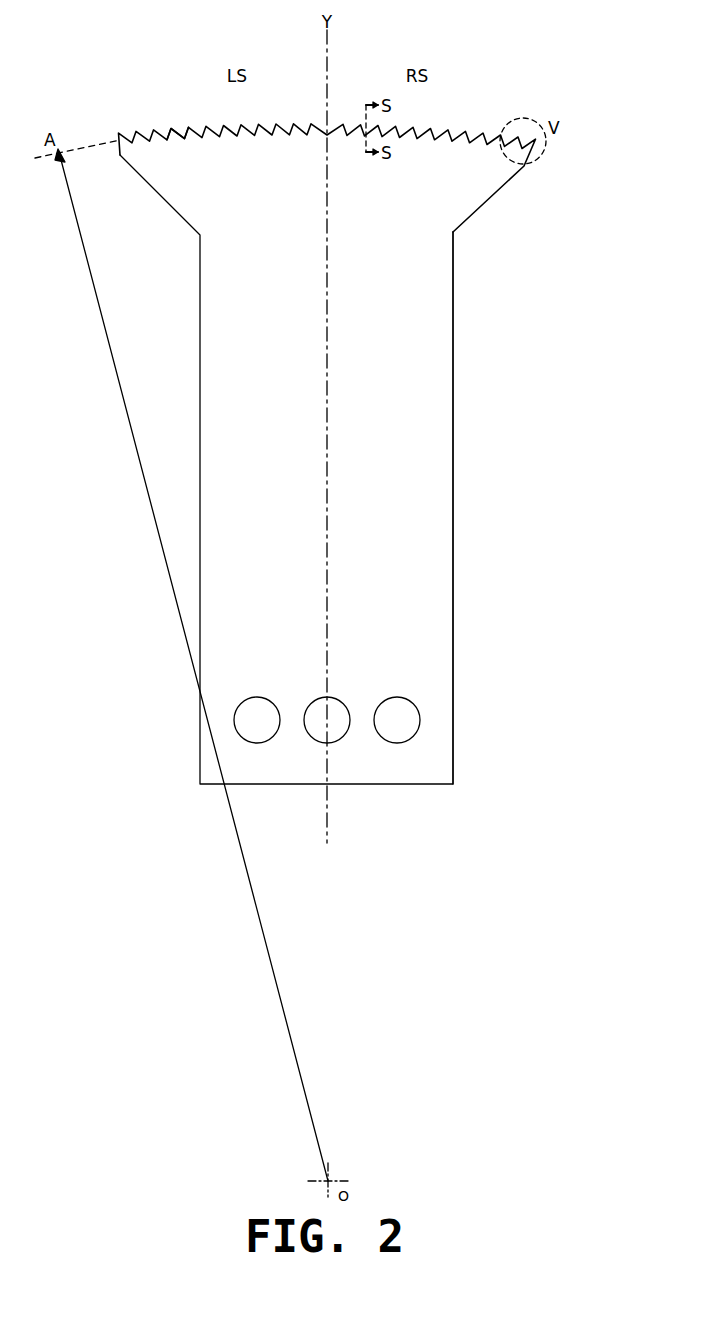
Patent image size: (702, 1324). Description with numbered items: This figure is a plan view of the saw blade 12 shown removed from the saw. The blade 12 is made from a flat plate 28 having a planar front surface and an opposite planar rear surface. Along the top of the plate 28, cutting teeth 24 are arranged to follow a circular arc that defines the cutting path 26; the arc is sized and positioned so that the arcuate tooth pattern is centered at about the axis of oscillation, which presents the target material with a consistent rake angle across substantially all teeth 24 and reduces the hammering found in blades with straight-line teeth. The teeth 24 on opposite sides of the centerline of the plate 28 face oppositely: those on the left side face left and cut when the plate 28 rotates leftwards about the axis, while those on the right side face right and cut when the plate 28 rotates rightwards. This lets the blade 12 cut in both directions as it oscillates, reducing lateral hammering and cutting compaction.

The saw blade 12 is at (483, 545).
The cutting teeth 24 is at (450, 136).
The cutting path 26 is at (176, 124).
The plate 28 is at (430, 455).